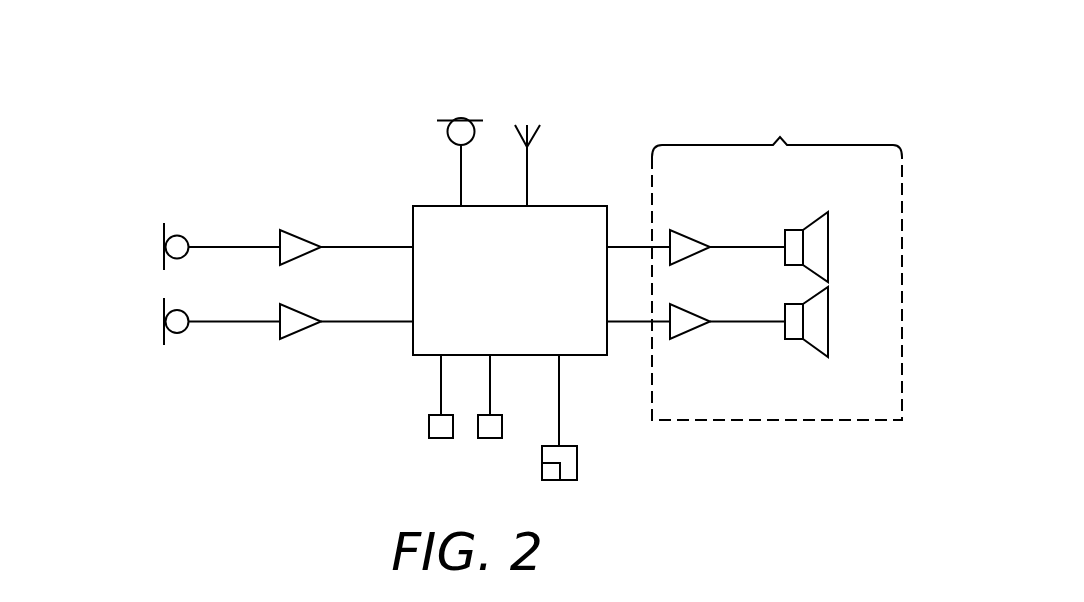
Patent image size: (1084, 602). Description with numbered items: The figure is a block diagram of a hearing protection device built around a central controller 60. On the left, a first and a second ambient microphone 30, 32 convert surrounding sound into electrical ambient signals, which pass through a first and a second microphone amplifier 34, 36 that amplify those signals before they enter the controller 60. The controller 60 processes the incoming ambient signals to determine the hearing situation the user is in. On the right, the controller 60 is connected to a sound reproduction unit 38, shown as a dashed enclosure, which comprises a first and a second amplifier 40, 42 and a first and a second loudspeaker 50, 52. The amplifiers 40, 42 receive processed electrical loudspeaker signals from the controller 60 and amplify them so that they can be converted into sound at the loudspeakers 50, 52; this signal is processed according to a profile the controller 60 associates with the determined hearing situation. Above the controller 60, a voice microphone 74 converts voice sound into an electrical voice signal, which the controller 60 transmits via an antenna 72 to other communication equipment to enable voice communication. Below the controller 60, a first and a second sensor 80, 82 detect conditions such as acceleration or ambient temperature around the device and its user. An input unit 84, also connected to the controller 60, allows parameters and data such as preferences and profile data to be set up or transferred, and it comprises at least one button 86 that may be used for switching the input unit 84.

The first ambient microphone 30 is at (163, 233).
The second ambient microphone 32 is at (163, 337).
The first microphone amplifier 34 is at (297, 236).
The second microphone amplifier 36 is at (301, 331).
The sound reproduction unit 38 is at (777, 261).
The first amplifier 40 is at (688, 237).
The second amplifier 42 is at (693, 330).
The first loudspeaker 50 is at (830, 235).
The second loudspeaker 52 is at (828, 337).
The controller 60 is at (493, 293).
The antenna 72 is at (533, 122).
The voice microphone 74 is at (445, 117).
The first sensor 80 is at (428, 430).
The second sensor 82 is at (502, 425).
The input unit 84 is at (577, 463).
The button 86 is at (542, 472).